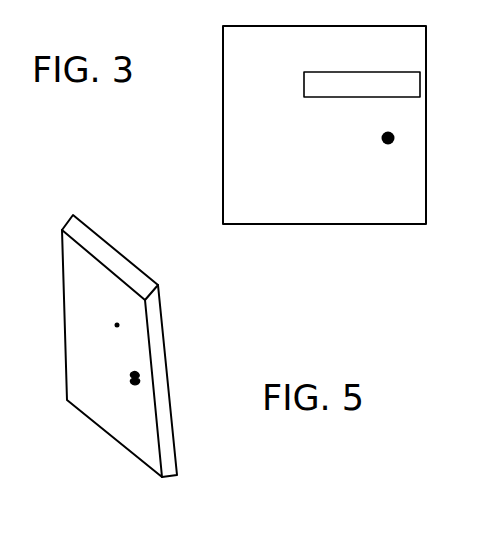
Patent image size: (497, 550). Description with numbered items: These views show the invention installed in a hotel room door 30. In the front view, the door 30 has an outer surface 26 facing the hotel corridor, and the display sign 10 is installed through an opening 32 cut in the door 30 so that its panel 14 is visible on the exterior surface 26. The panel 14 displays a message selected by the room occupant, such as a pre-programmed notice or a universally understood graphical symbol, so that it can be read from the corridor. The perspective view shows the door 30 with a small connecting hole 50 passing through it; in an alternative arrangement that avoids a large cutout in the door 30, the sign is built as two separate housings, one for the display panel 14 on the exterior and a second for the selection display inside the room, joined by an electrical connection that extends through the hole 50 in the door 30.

In FIG. 3, the display sign 10 is at (397, 66).
In FIG. 3, the panel 14 is at (396, 94).
In FIG. 3, the outer surface 26 is at (318, 183).
In FIG. 3, the hotel room door 30 is at (235, 147).
In FIG. 5, the hotel room door 30 is at (162, 345).
In FIG. 3, the opening 32 is at (330, 98).
In FIG. 5, the hole 50 is at (106, 327).